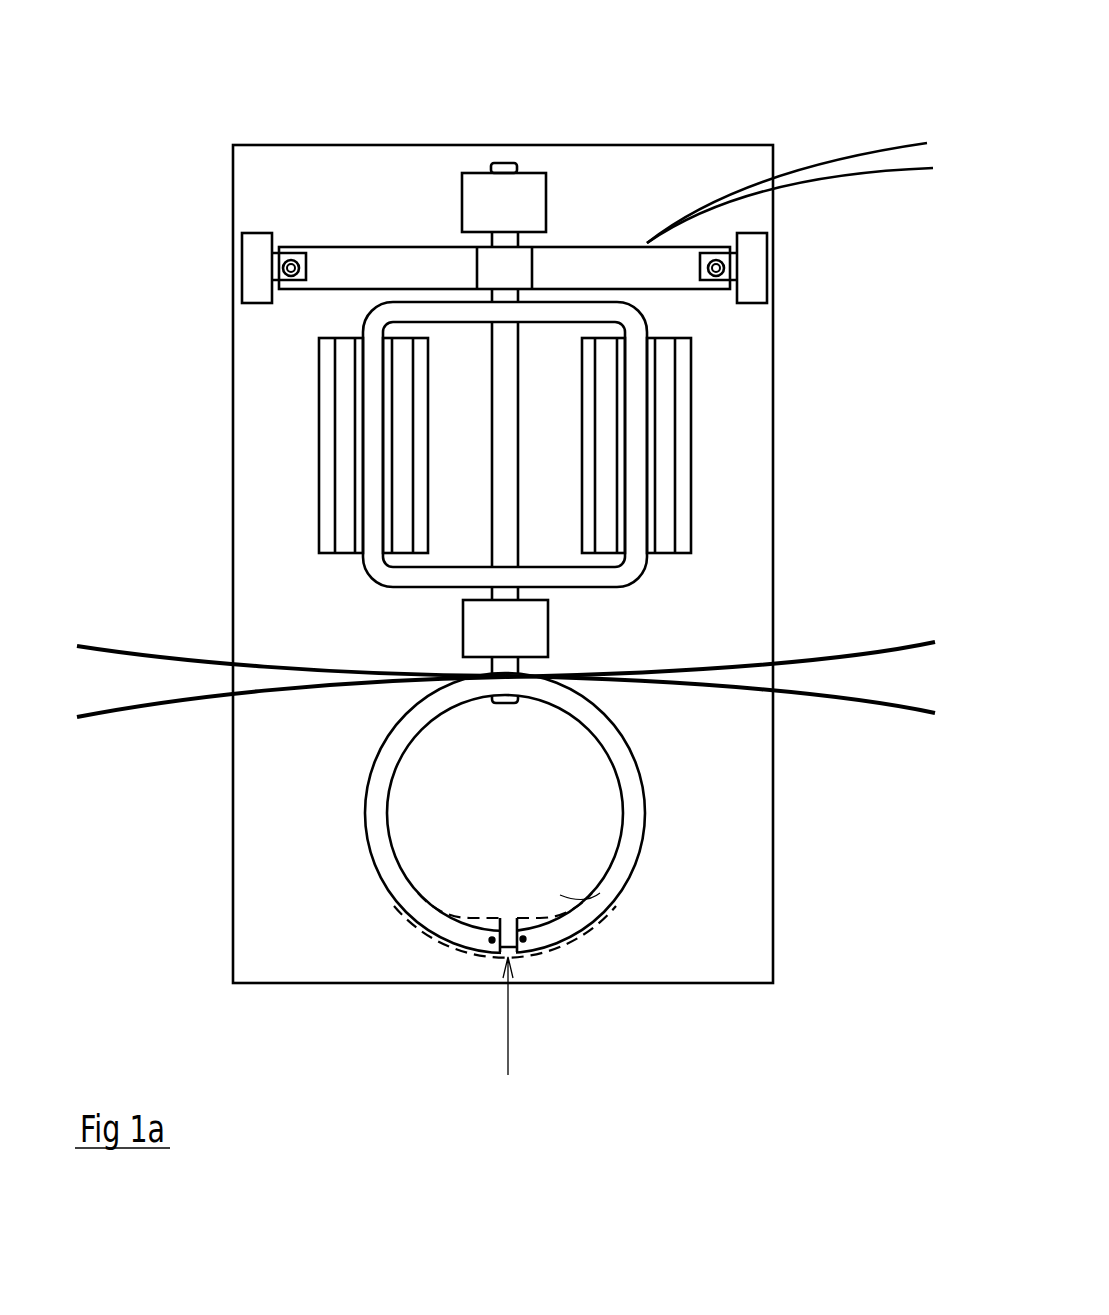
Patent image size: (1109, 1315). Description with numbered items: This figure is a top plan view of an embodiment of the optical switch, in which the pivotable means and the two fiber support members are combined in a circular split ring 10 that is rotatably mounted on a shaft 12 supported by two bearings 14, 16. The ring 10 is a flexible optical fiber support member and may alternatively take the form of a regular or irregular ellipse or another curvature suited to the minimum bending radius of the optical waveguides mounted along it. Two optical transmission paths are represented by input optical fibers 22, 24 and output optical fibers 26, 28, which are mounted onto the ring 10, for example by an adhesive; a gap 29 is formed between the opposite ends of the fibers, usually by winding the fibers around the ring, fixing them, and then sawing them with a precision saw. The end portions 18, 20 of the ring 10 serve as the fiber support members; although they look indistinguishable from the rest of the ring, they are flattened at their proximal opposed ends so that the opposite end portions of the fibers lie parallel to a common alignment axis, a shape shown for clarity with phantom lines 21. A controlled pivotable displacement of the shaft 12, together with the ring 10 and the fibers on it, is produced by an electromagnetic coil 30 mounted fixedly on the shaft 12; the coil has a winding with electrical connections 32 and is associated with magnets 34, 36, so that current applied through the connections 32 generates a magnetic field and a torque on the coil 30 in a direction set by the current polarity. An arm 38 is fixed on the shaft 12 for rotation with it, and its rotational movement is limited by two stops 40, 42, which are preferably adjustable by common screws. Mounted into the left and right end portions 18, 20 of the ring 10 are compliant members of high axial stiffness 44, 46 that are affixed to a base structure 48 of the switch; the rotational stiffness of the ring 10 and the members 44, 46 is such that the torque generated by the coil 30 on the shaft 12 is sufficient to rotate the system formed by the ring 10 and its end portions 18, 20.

The circular split ring 10 is at (378, 872).
The shaft 12 is at (490, 403).
The bearing 14 is at (463, 635).
The bearing 16 is at (460, 187).
The end portion of the ring 18 is at (458, 935).
The end portion of the ring 20 is at (523, 939).
The phantom lines 21 is at (532, 913).
The input optical fiber 22 is at (162, 706).
The input optical fiber 24 is at (162, 648).
The output optical fiber 26 is at (851, 652).
The output optical fiber 28 is at (849, 704).
The gap 29 is at (515, 1034).
The electromagnetic coil 30 is at (370, 423).
The electrical connections 32 is at (893, 145).
The magnet 34 is at (398, 386).
The magnet 36 is at (668, 436).
The arm 38 is at (384, 247).
The stop 40 is at (272, 267).
The stop 42 is at (728, 266).
The compliant member of high axial stiffness 44 is at (492, 940).
The compliant member of high axial stiffness 46 is at (545, 950).
The base structure 48 is at (623, 145).